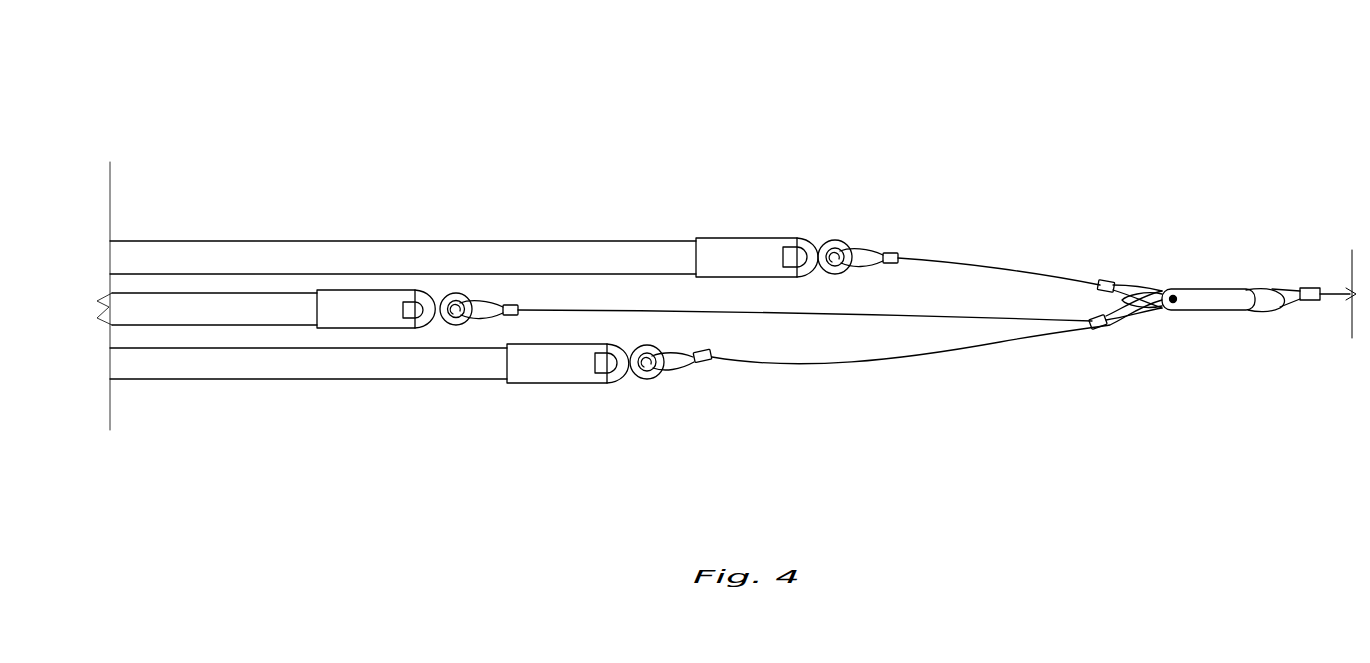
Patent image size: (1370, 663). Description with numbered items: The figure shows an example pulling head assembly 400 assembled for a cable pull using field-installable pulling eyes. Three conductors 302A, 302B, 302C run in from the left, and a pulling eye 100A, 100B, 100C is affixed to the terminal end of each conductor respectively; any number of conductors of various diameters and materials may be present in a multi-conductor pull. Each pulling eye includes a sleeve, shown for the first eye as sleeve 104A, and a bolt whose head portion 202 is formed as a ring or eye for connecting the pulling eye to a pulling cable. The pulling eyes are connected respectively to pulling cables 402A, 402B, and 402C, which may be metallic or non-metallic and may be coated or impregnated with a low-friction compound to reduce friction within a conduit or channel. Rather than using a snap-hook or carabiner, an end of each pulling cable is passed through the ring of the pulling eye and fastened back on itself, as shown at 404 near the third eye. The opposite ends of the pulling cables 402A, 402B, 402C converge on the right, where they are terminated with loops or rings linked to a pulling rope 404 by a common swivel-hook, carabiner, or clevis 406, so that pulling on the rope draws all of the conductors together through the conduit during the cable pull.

The pulling head assembly 400 is at (364, 75).
The conductor 302A is at (665, 251).
The conductor 302B is at (268, 312).
The conductor 302C is at (360, 362).
The pulling eye 100A is at (733, 253).
The pulling eye 100B is at (368, 315).
The pulling eye 100C is at (558, 362).
The sleeve 104A is at (818, 258).
The head portion 202 is at (642, 378).
The pulling rope 404 is at (680, 368).
The pulling cable 402A is at (994, 246).
The pulling cable 402B is at (930, 298).
The pulling cable 402C is at (808, 348).
The swivel-hook, carabiner, or clevis 406 is at (1210, 300).